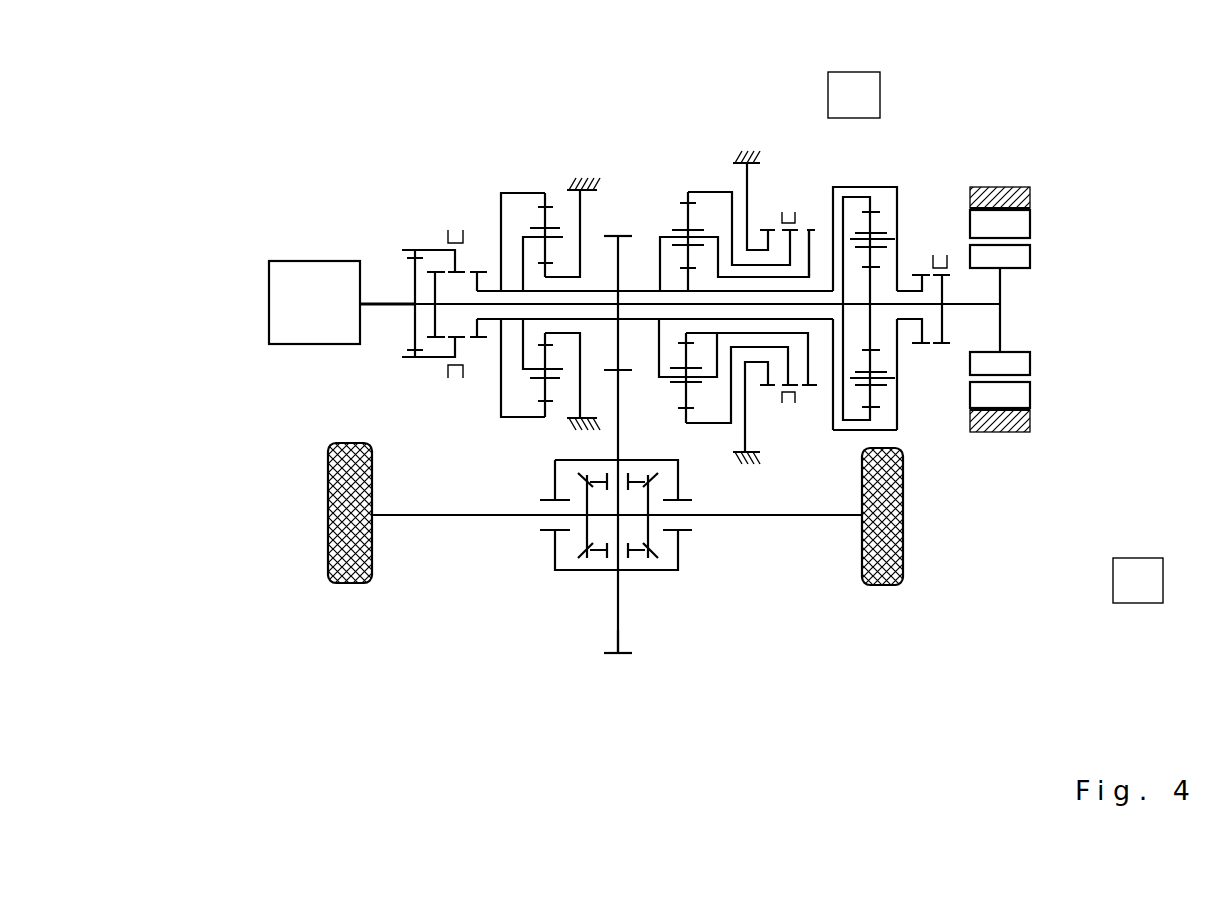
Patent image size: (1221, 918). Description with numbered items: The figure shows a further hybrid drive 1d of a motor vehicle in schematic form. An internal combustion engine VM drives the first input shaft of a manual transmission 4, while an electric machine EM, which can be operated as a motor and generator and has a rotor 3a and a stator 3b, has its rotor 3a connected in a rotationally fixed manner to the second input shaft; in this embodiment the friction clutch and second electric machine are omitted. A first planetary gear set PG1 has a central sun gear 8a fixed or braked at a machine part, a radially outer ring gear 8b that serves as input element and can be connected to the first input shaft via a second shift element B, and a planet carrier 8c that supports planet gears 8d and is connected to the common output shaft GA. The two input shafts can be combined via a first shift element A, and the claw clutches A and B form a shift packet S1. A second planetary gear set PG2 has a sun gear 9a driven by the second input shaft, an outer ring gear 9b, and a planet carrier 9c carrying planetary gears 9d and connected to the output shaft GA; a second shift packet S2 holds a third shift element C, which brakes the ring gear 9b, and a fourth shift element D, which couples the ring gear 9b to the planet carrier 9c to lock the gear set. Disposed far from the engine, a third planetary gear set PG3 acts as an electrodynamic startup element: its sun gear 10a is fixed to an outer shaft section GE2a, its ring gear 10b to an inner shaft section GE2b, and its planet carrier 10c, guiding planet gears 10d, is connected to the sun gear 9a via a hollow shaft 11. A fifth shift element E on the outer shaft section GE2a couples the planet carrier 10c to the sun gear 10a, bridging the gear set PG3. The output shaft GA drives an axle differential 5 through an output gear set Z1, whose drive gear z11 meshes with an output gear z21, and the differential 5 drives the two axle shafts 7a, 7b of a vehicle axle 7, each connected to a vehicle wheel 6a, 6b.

The hybrid drive 1d is at (268, 131).
The manual transmission 4 is at (486, 137).
The internal combustion engine VM is at (290, 346).
The first shift element A is at (446, 266).
The second shift element B is at (478, 266).
The third shift element C is at (765, 200).
The fourth shift element D is at (810, 229).
The fifth shift element E is at (923, 281).
The shift packet S1 is at (455, 391).
The second shift packet S2 is at (775, 413).
The first planetary gear set PG1 is at (543, 186).
The second planetary gear set PG2 is at (694, 189).
The third planetary gear set PG3 is at (878, 190).
The sun gear 8a is at (567, 335).
The ring gear 8b is at (513, 192).
The planet carrier 8c is at (530, 376).
The planet gears 8d is at (547, 218).
The sun gear 9a is at (702, 335).
The ring gear 9b is at (718, 192).
The planet carrier 9c is at (665, 385).
The planetary gears 9d is at (663, 213).
The sun gear 10a is at (870, 321).
The ring gear 10b is at (858, 197).
The planet carrier 10c is at (887, 430).
The planet gears 10d is at (870, 397).
The hollow shaft 11 is at (810, 320).
The output shaft GA is at (647, 293).
The outer shaft section GE2a is at (960, 303).
The inner shaft section GE2b is at (831, 290).
The drive gear z11 is at (623, 234).
The output gear z21 is at (618, 656).
The output gear set Z1 is at (615, 730).
The electric machine EM is at (1012, 181).
The rotor 3a is at (1031, 255).
The stator 3b is at (1031, 224).
The axle differential 5 is at (573, 571).
The vehicle axle 7 is at (815, 522).
The axle shaft 7a is at (418, 517).
The axle shaft 7b is at (826, 517).
The vehicle wheel 6a is at (345, 586).
The vehicle wheel 6b is at (886, 588).